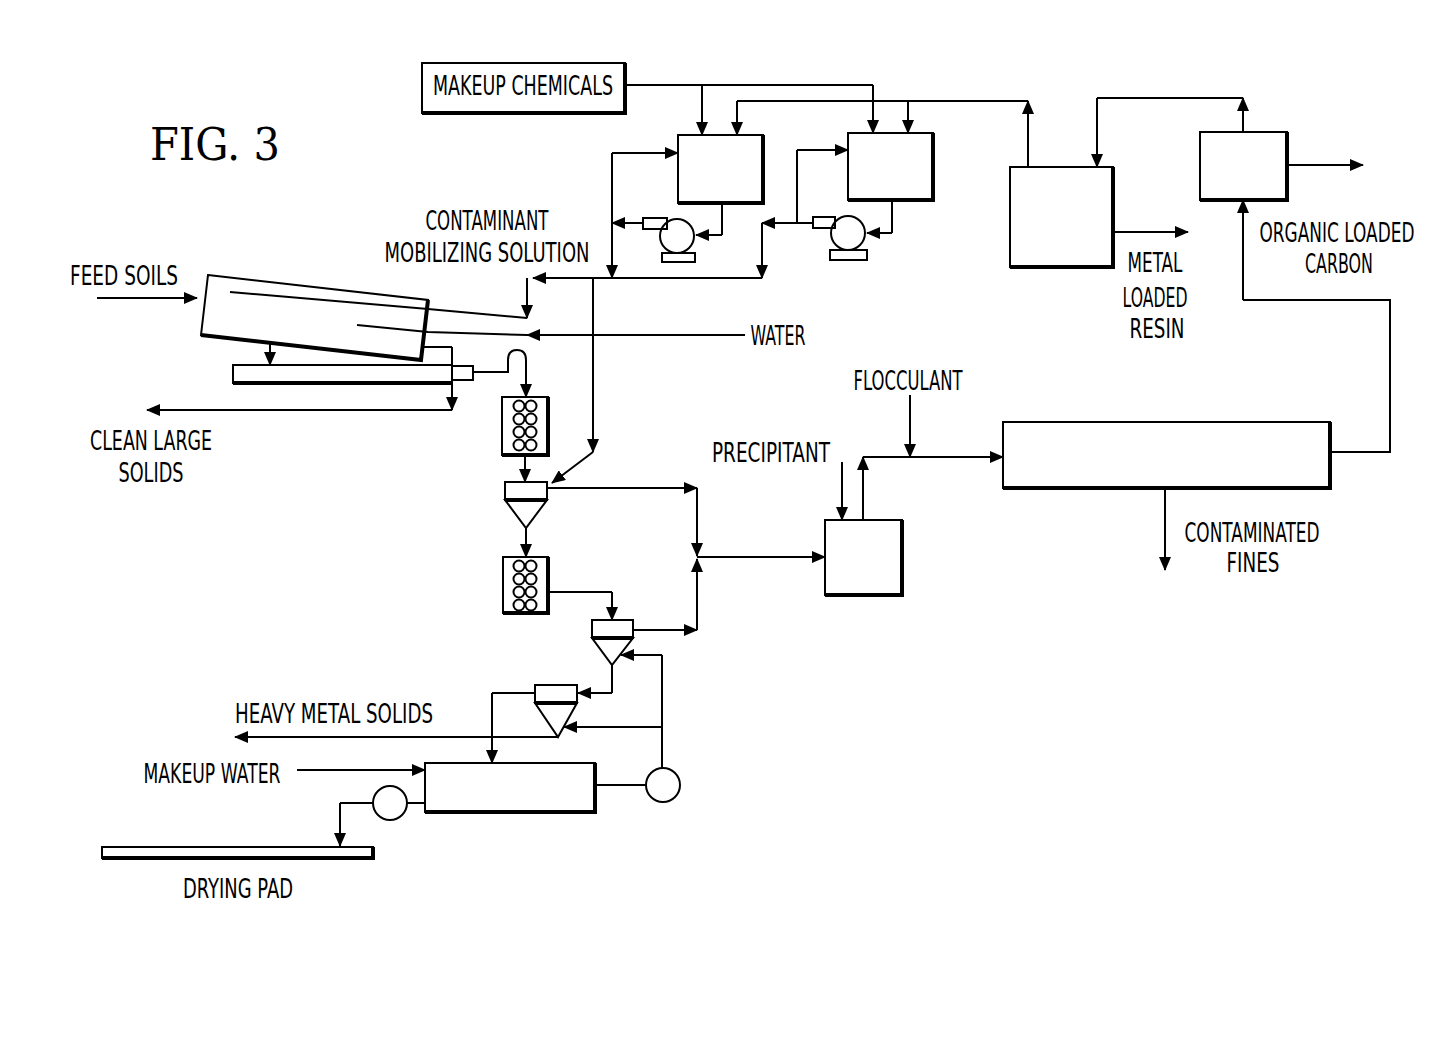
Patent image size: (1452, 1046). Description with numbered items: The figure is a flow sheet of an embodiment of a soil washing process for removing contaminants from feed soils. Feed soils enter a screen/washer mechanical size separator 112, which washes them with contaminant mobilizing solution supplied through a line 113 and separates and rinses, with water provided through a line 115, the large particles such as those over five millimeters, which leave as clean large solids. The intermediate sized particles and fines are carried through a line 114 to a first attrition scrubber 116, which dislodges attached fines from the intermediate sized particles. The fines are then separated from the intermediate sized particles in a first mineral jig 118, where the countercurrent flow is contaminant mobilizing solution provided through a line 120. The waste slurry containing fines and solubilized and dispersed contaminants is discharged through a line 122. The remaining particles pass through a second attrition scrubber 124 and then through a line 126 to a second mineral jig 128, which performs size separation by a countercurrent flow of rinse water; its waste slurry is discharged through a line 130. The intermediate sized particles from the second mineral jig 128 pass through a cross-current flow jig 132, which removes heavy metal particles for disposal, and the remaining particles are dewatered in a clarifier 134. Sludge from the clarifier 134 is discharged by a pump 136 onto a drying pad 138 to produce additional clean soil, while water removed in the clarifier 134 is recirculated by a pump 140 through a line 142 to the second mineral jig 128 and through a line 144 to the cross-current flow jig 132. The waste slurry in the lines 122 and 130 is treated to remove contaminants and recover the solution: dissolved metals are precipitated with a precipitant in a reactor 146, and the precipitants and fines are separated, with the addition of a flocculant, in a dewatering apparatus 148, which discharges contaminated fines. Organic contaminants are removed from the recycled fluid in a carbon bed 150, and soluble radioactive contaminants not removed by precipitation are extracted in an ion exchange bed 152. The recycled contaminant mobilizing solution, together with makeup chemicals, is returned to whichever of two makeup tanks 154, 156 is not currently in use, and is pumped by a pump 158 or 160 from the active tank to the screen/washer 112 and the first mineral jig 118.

The screen/washer mechanical size separator 112 is at (307, 286).
The line 113 is at (531, 292).
The line 114 is at (521, 351).
The line 115 is at (637, 334).
The first attrition scrubber 116 is at (503, 422).
The first mineral jig 118 is at (512, 512).
The line 120 is at (593, 393).
The line 122 is at (629, 487).
The second attrition scrubber 124 is at (503, 598).
The line 126 is at (576, 591).
The second mineral jig 128 is at (607, 661).
The line 130 is at (660, 629).
The cross-current flow jig 132 is at (536, 685).
The clarifier 134 is at (553, 812).
The pump 136 is at (397, 820).
The drying pad 138 is at (273, 846).
The pump 140 is at (680, 789).
The line 142 is at (662, 707).
The line 144 is at (641, 728).
The reactor 146 is at (863, 595).
The dewatering apparatus 148 is at (1230, 422).
The carbon bed 150 is at (1288, 147).
The ion exchange bed 152 is at (1043, 267).
The makeup tank 154 is at (933, 185).
The makeup tank 156 is at (678, 178).
The pump 158 is at (847, 260).
The pump 160 is at (678, 262).